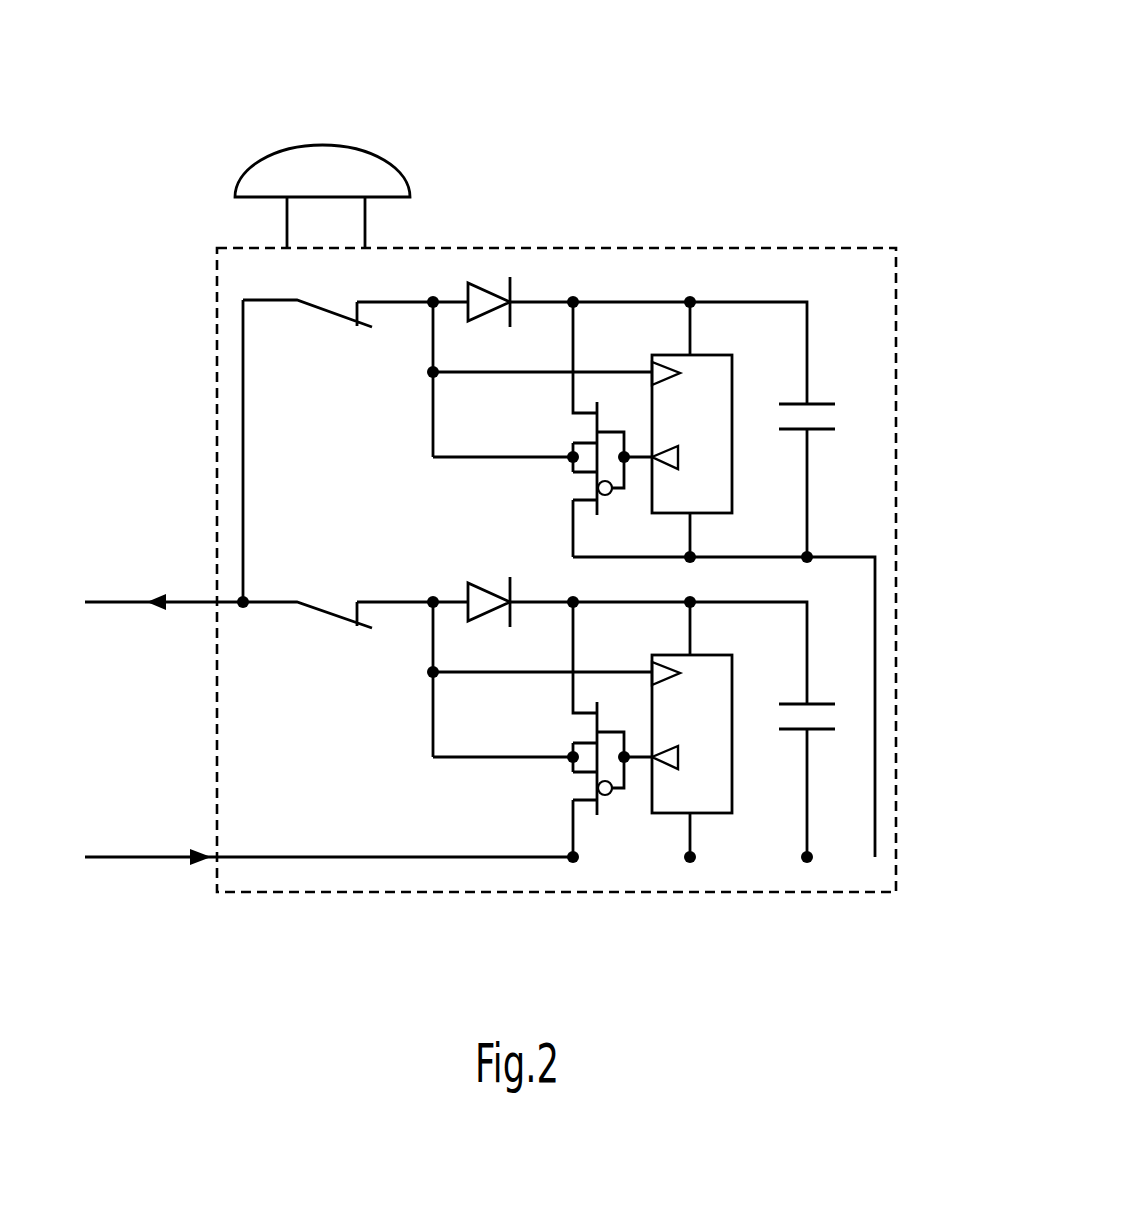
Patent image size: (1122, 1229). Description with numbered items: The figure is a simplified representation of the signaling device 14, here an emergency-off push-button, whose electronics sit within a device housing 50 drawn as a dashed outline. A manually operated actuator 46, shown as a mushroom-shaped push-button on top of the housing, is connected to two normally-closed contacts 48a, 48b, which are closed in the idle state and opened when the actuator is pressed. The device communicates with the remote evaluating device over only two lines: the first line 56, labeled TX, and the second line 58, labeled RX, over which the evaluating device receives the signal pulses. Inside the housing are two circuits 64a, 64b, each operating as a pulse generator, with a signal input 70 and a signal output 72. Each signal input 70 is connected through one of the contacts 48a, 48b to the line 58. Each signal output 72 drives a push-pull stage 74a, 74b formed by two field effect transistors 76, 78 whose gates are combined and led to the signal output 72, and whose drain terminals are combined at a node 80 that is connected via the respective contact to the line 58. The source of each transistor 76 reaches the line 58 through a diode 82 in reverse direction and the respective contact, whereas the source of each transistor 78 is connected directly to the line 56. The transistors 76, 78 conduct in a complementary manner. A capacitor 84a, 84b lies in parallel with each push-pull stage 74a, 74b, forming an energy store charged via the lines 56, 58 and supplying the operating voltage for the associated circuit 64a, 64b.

The signaling device 14 is at (814, 134).
The actuator 46 is at (357, 147).
The normally-closed contact 48a is at (312, 307).
The normally-closed contact 48b is at (313, 612).
The device housing 50 is at (577, 250).
The first line 56 is at (103, 860).
The second line 58 is at (103, 604).
The circuit 64a is at (733, 467).
The circuit 64b is at (735, 767).
The signal input 70 is at (662, 363).
The signal output 72 is at (668, 768).
The push-pull stage 74a is at (522, 486).
The push-pull stage 74b is at (528, 781).
The transistor 76 is at (602, 410).
The transistor 78 is at (600, 505).
The node 80 is at (568, 454).
The diode 82 is at (493, 300).
The capacitor 84a is at (810, 402).
The capacitor 84b is at (827, 733).